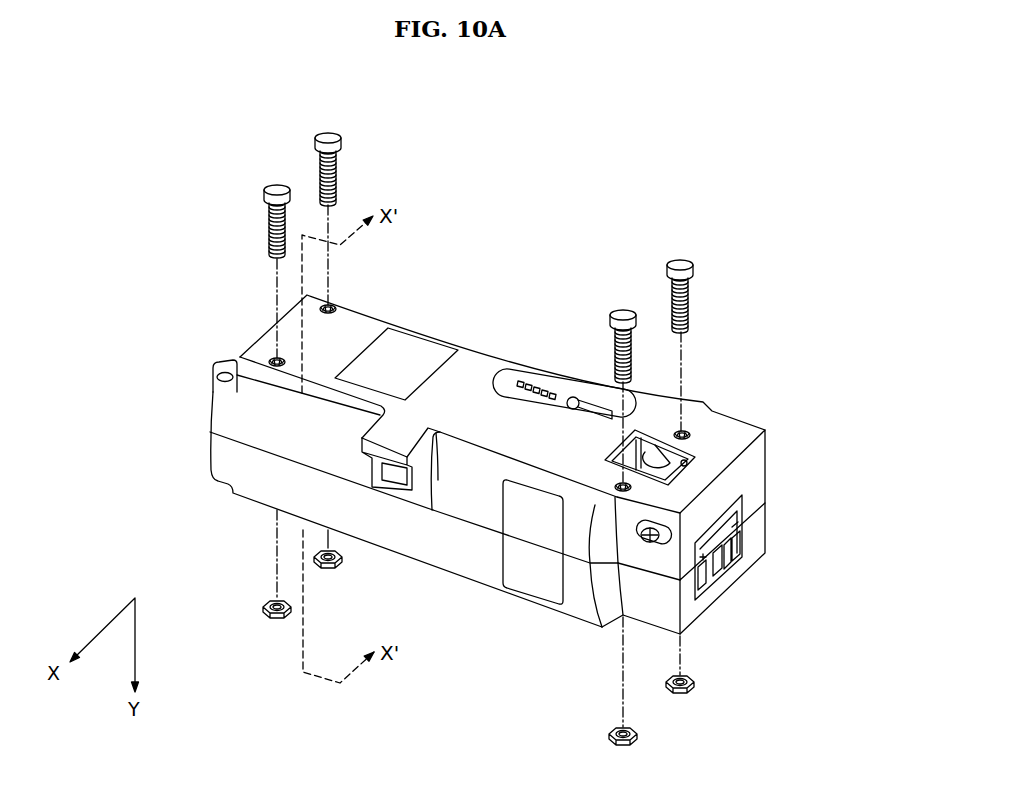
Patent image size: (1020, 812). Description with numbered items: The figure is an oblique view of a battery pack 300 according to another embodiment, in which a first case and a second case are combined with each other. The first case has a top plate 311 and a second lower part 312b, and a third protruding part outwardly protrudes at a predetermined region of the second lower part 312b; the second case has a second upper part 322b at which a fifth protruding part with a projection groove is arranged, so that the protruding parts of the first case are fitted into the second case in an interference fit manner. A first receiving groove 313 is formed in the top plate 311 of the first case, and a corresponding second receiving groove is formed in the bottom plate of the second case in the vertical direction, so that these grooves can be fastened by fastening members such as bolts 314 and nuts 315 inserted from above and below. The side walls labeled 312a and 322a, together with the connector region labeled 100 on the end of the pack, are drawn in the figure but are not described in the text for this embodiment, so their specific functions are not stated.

The battery pack 300 is at (781, 316).
The top plate 311 is at (737, 430).
The upper housing side wall 312a is at (757, 478).
The second lower part 312b is at (474, 512).
The lower housing side wall 322a is at (757, 530).
The second upper part 322b is at (258, 488).
The first receiving groove 313 is at (336, 305).
The bolt 314 is at (343, 134).
The nut 315 is at (338, 566).
The connector 100 is at (740, 557).